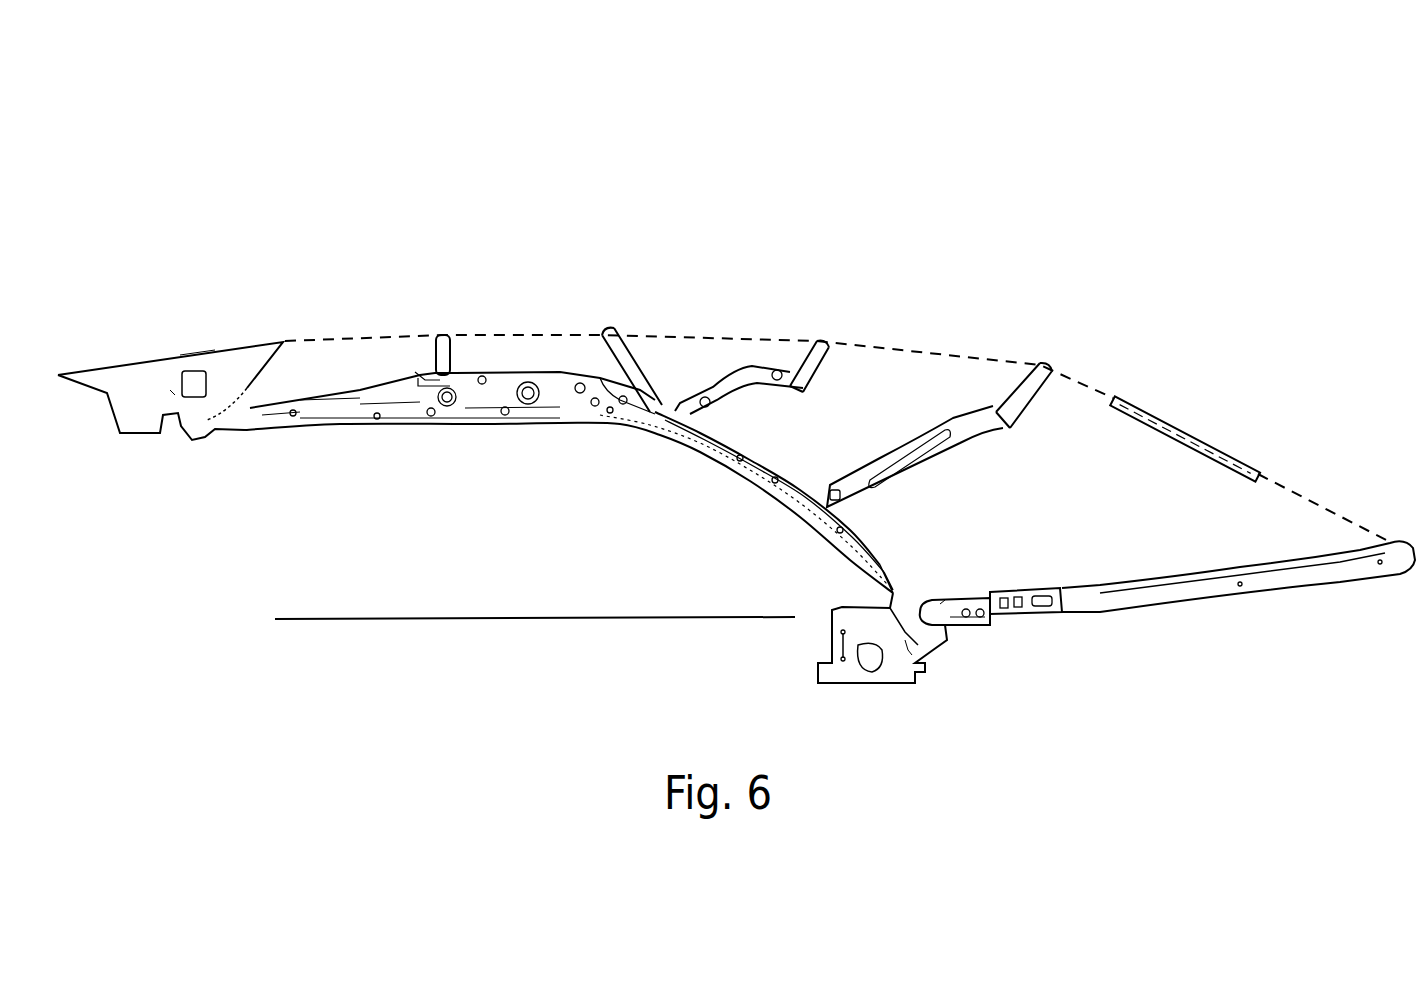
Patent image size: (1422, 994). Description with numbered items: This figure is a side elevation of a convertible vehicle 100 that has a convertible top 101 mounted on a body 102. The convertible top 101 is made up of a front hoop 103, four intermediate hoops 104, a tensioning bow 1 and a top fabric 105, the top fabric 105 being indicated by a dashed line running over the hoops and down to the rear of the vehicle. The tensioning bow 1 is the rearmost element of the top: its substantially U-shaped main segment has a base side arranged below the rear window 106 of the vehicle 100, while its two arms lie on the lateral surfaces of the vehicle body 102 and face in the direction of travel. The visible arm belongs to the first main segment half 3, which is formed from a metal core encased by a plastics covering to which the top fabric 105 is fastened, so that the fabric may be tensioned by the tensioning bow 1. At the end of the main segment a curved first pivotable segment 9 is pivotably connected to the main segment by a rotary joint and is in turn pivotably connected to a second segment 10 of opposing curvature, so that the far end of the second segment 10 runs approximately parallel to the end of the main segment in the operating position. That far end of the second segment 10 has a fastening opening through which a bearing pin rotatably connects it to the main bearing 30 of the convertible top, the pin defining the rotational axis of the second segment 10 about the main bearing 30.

The tensioning bow 1 is at (1238, 625).
The first main segment half 3 is at (1158, 595).
The first pivotable segment 9 is at (1017, 590).
The second segment 10 is at (968, 622).
The main bearing 30 is at (918, 640).
The convertible vehicle 100 is at (1180, 186).
The convertible top 101 is at (974, 206).
The body 102 is at (537, 669).
The front hoop 103 is at (233, 345).
The intermediate hoops 104 is at (1040, 365).
The top fabric 105 is at (377, 337).
The rear window 106 is at (1175, 425).